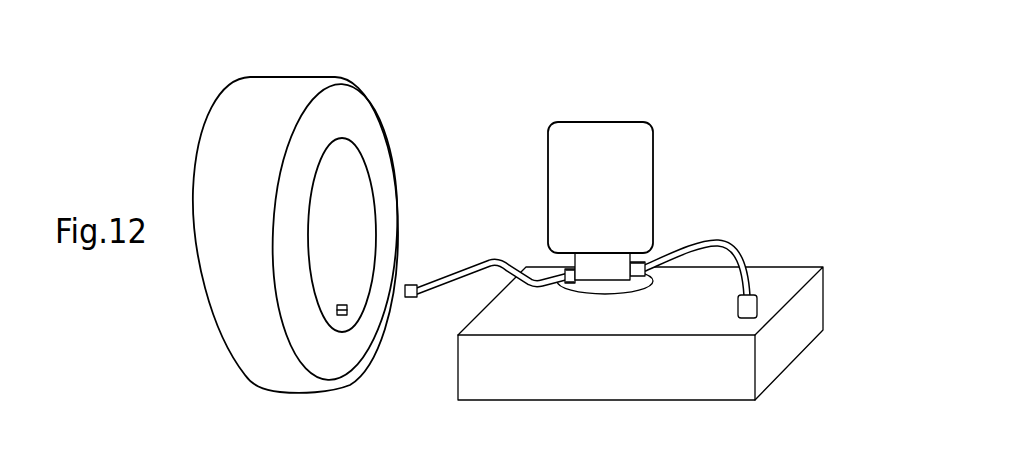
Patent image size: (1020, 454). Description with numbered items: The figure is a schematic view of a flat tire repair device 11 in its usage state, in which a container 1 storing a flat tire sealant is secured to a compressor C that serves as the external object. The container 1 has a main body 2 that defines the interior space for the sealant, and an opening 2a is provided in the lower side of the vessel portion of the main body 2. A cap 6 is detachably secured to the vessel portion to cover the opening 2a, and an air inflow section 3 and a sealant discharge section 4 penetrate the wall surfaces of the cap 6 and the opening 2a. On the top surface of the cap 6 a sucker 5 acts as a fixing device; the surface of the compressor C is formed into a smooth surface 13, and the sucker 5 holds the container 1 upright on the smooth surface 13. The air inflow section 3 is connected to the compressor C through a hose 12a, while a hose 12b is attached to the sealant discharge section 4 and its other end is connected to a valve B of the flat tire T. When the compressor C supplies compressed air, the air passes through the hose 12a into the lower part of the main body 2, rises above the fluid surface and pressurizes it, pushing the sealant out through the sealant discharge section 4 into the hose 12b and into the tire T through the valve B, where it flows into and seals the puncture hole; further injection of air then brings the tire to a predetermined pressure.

The container 1 is at (599, 121).
The main body 2 is at (648, 122).
The opening 2a is at (600, 253).
The air inflow section 3 is at (640, 260).
The sealant discharge section 4 is at (566, 273).
The sucker 5 is at (587, 298).
The cap 6 is at (613, 266).
The flat tire repair device 11 is at (795, 163).
The hose 12a is at (737, 243).
The hose 12b is at (470, 265).
The smooth surface 13 is at (568, 297).
The flat tire T is at (248, 80).
The valve B is at (347, 303).
The compressor C is at (825, 307).